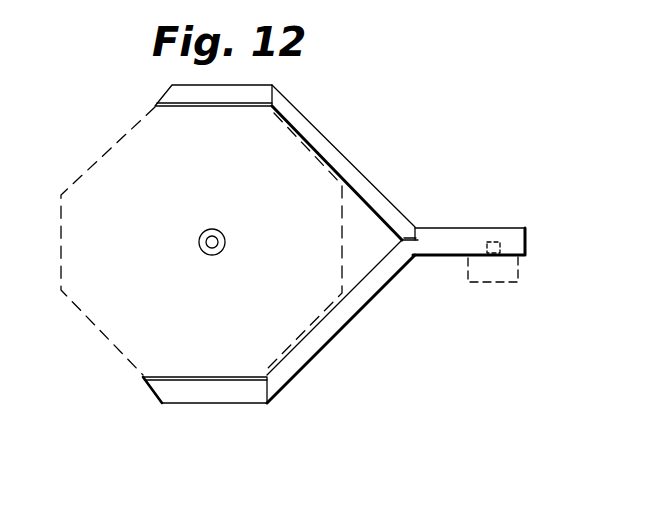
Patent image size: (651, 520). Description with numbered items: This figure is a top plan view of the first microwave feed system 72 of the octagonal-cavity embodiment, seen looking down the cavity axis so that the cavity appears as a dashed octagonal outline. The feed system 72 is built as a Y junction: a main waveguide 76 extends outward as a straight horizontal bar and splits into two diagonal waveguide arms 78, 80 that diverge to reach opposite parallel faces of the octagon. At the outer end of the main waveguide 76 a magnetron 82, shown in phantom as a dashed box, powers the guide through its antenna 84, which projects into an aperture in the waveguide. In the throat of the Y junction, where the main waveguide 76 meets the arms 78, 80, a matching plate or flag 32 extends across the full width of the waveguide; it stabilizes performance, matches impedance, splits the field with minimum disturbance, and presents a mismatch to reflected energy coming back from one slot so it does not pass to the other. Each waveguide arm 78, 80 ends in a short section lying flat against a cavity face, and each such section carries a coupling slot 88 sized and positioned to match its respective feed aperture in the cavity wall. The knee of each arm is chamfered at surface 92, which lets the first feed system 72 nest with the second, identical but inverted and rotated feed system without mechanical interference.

The matching plate or flag 32 is at (416, 235).
The first microwave feed system 72 is at (383, 178).
The main waveguide 76 is at (480, 228).
The waveguide arm 78 is at (343, 327).
The waveguide arm 80 is at (328, 142).
The magnetron 82 is at (520, 280).
The antenna 84 is at (500, 246).
The coupling slot 88 is at (213, 107).
The chamfered surface 92 is at (160, 98).